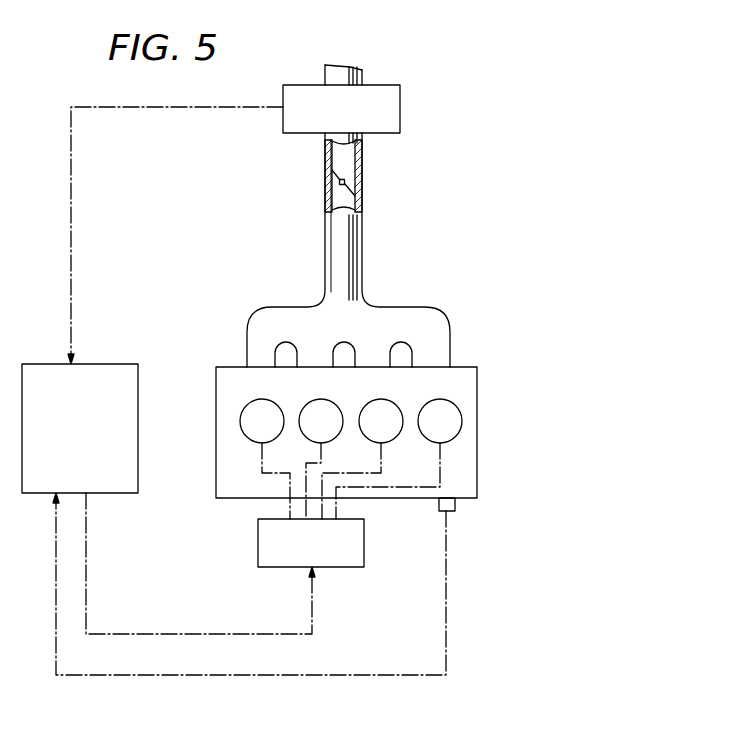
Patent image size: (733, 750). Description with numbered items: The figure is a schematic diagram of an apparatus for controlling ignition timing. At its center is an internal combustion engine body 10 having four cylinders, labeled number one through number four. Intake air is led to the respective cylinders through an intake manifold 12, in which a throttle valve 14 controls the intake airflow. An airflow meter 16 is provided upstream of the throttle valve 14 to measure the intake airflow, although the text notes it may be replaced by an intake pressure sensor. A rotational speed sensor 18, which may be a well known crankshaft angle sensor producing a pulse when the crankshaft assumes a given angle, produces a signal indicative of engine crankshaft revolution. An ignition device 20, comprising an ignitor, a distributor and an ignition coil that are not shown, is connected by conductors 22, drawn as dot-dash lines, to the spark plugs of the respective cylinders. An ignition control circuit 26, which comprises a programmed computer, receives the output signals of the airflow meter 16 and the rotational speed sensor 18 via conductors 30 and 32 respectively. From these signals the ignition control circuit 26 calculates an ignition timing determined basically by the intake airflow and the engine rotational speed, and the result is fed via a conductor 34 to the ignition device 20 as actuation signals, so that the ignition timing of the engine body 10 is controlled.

The internal combustion engine body 10 is at (477, 432).
The intake manifold 12 is at (362, 240).
The throttle valve 14 is at (348, 183).
The airflow meter 16 is at (401, 105).
The rotational speed sensor 18 is at (455, 510).
The ignition device 20 is at (364, 540).
The conductors 22 is at (288, 511).
The ignition control circuit 26 is at (138, 390).
The conductor 30 is at (72, 250).
The conductor 32 is at (55, 612).
The conductor 34 is at (87, 598).